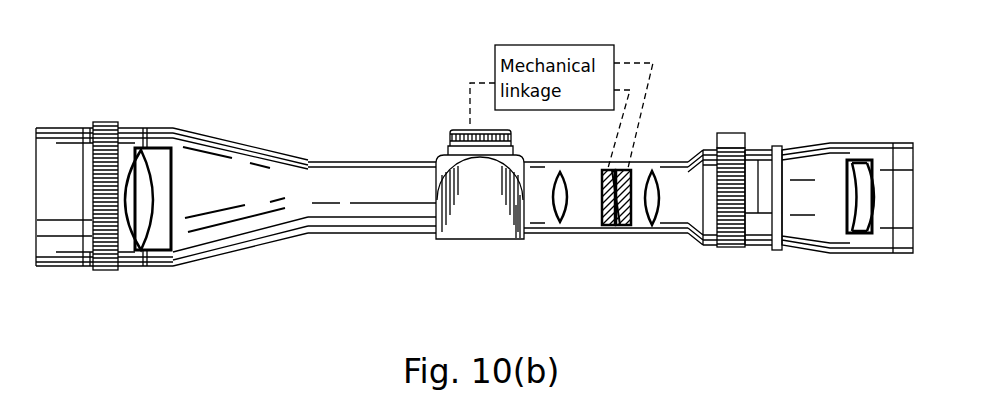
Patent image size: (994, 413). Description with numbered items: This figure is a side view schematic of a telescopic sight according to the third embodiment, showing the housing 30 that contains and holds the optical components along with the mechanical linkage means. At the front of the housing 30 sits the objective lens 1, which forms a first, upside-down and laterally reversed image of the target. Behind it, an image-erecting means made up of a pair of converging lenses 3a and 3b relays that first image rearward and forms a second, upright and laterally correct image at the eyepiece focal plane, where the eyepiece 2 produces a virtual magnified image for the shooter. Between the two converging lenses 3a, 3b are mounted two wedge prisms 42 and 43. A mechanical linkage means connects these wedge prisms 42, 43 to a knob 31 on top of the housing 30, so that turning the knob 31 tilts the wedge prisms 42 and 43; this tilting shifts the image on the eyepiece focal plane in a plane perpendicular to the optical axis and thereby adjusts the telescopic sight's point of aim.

The objective lens 1 is at (147, 252).
The eyepiece 2 is at (860, 235).
The converging lens 3a is at (560, 225).
The converging lens 3b is at (655, 226).
The housing 30 is at (260, 148).
The knob 31 is at (448, 130).
The wedge prism 42 is at (604, 226).
The wedge prism 43 is at (627, 226).